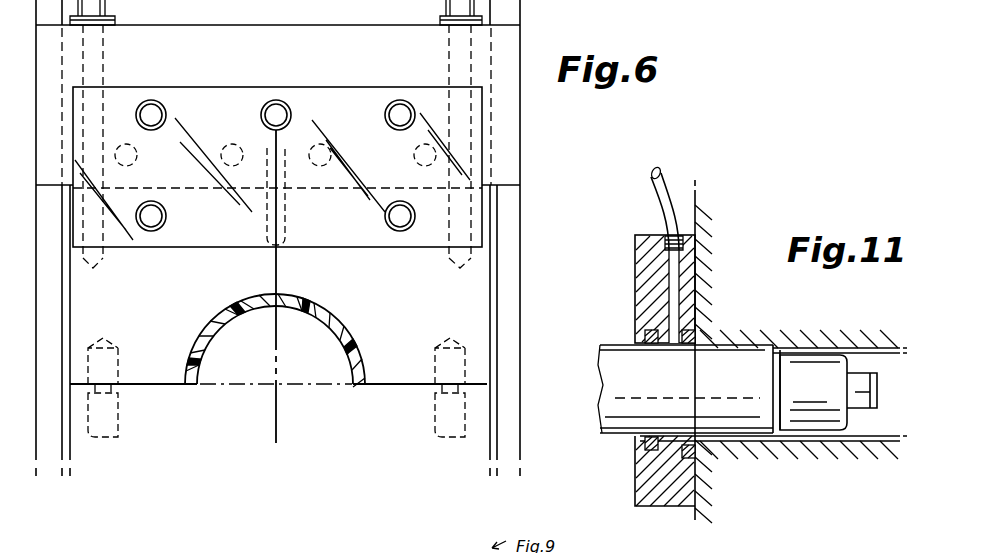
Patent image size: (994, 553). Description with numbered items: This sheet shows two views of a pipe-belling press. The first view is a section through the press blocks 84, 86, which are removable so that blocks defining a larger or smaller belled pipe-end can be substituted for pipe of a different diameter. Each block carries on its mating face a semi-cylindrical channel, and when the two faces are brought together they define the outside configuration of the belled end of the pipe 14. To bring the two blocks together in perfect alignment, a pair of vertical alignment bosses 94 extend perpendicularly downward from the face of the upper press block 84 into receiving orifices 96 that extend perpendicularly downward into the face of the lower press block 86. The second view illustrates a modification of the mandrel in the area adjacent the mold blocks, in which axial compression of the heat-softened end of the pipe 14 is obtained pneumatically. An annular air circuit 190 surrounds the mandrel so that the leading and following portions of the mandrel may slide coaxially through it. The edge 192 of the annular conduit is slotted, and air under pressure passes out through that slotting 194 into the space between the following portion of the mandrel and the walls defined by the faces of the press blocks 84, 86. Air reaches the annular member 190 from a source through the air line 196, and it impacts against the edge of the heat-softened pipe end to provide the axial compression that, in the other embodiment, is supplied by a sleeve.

In FIG. 6, the pipe 14 is at (344, 333).
In FIG. 11, the pipe 14 is at (873, 346).
In FIG. 6, the press block 84 is at (384, 368).
In FIG. 6, the press block 86 is at (231, 402).
In FIG. 6, the vertical alignment bosses 94 is at (118, 414).
In FIG. 6, the receiving orifices 96 is at (101, 452).
In FIG. 11, the annular air circuit 190 is at (642, 302).
In FIG. 11, the edge 192 is at (688, 345).
In FIG. 11, the slotting 194 is at (700, 345).
In FIG. 11, the air line 196 is at (672, 276).